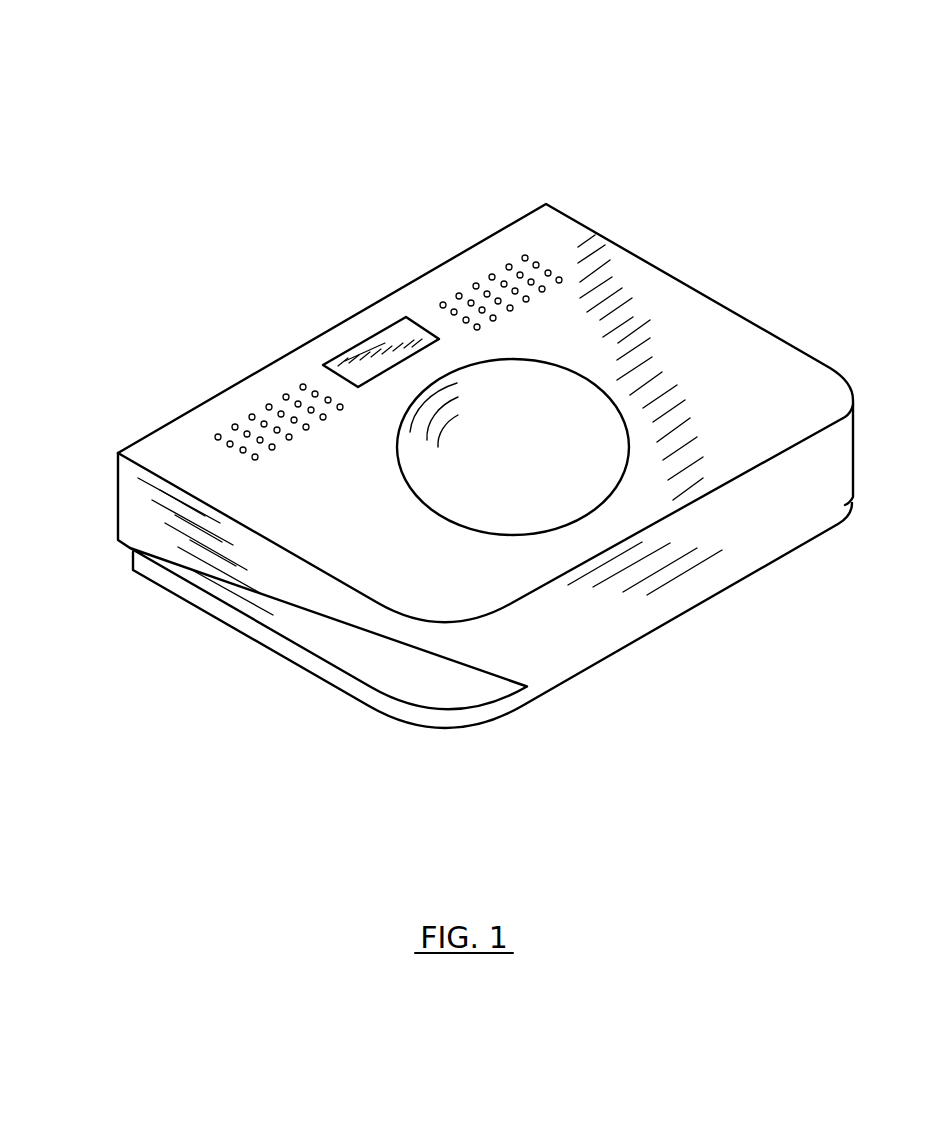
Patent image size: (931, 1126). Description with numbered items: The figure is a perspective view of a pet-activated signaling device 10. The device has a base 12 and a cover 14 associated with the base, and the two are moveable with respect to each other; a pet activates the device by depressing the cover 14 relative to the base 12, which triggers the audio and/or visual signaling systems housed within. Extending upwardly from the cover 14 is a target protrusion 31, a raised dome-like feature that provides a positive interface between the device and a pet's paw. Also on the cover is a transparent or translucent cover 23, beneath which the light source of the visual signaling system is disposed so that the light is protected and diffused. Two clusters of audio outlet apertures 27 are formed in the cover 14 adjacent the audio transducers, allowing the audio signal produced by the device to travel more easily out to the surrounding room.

The pet-activated signaling device 10 is at (137, 77).
The base 12 is at (138, 563).
The cover 14 is at (118, 498).
The transparent or translucent cover 23 is at (403, 332).
The audio outlet apertures 27 is at (247, 412).
The target protrusion 31 is at (427, 508).